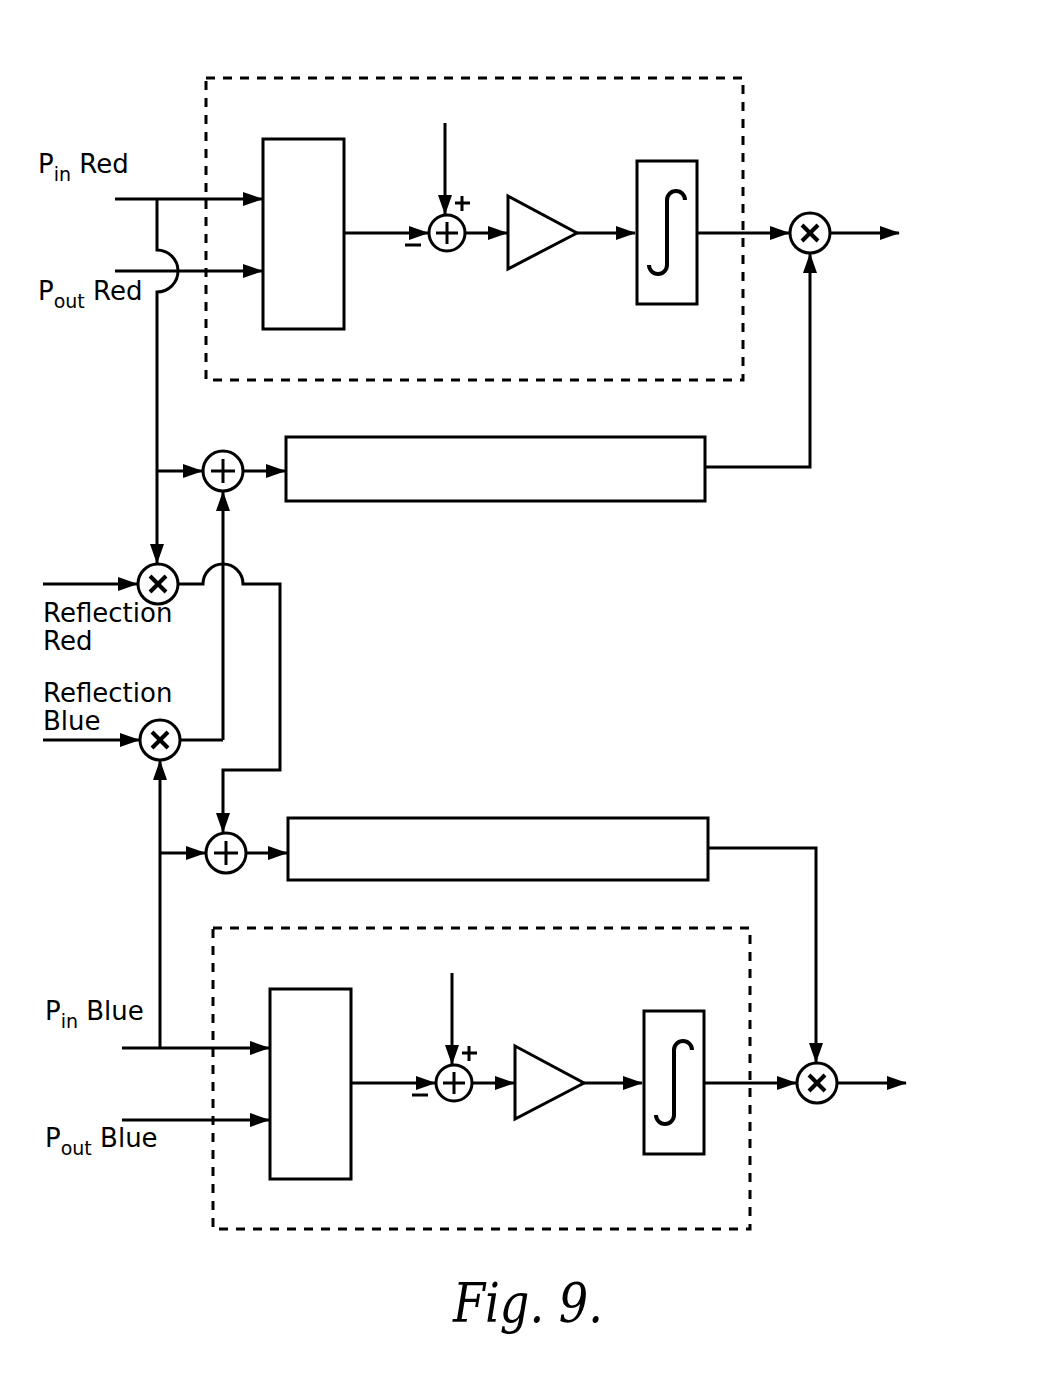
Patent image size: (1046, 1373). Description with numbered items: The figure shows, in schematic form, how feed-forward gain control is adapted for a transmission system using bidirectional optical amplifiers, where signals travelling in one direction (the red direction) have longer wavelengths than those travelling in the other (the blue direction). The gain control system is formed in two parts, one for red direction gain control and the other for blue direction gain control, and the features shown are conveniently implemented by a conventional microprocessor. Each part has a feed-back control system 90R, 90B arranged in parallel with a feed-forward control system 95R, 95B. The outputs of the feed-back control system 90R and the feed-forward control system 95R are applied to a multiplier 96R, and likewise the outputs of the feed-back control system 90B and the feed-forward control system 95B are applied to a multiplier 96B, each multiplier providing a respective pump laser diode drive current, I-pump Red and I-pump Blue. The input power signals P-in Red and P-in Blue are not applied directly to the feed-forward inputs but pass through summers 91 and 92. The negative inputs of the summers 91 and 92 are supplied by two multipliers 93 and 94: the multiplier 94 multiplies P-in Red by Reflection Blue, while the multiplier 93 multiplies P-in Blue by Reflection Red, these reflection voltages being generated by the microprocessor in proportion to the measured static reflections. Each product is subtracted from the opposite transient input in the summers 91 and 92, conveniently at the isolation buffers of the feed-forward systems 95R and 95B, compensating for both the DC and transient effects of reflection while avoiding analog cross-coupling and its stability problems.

The feed-back control system 90R is at (676, 74).
The feed-back control system 90B is at (677, 927).
The summer 91 is at (235, 487).
The summer 92 is at (243, 842).
The multiplier 93 is at (155, 757).
The multiplier 94 is at (153, 572).
The feed-forward control system 95R is at (643, 450).
The feed-forward control system 95B is at (670, 815).
The multiplier 96R is at (813, 248).
The multiplier 96B is at (822, 1095).